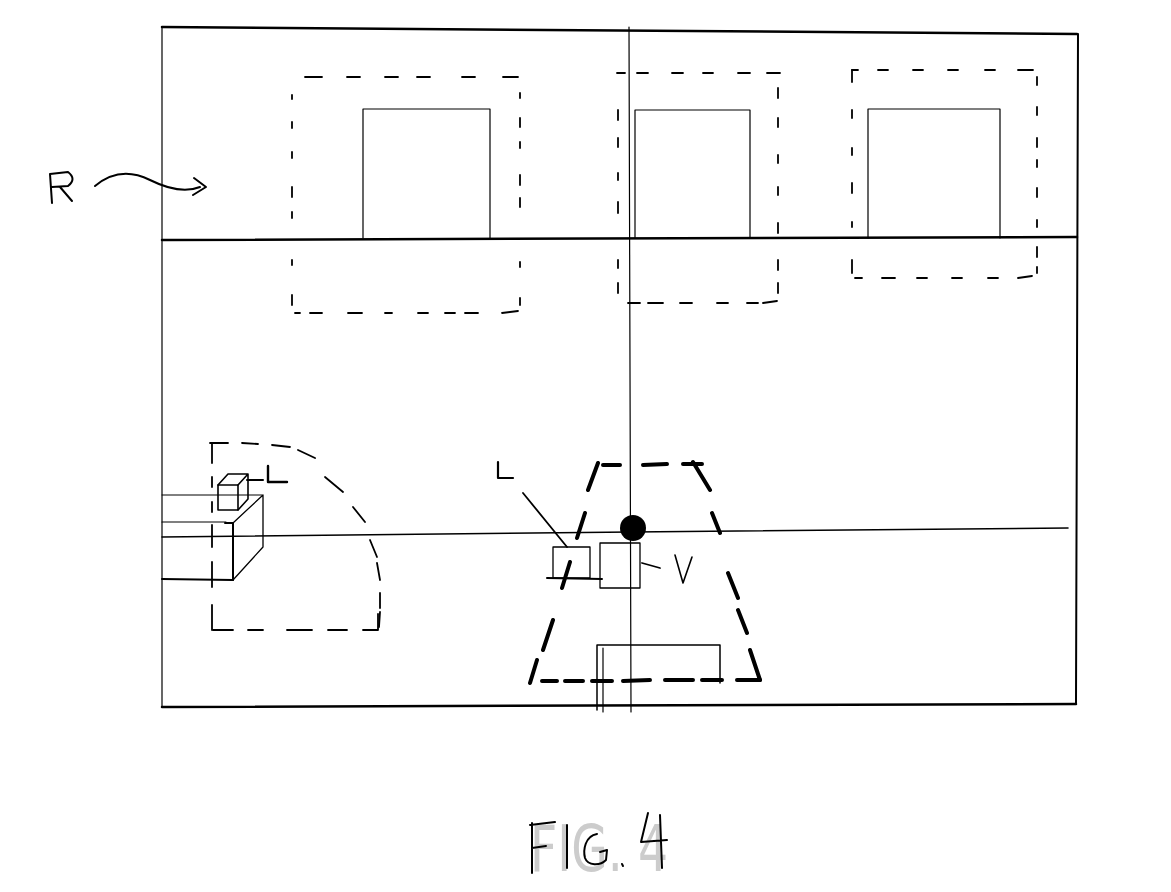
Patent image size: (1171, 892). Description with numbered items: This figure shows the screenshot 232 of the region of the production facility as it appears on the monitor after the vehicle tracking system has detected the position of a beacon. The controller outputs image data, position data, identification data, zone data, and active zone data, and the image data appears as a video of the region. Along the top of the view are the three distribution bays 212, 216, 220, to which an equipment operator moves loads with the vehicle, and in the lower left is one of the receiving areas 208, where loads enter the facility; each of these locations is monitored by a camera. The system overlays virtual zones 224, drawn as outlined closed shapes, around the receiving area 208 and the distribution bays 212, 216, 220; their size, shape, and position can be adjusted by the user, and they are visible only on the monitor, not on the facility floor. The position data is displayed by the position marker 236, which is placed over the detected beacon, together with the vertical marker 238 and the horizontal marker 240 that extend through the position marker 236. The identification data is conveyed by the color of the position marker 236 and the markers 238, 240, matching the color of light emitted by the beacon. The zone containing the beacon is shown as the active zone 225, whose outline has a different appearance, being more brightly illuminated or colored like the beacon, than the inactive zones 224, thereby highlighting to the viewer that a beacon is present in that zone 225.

The receiving area 208 is at (610, 643).
The distribution bay 212 is at (364, 188).
The distribution bay 216 is at (641, 182).
The distribution bay 220 is at (876, 180).
The virtual zone 224 is at (336, 318).
The active zone 225 is at (712, 468).
The screenshot 232 is at (1078, 400).
The position marker 236 is at (645, 512).
The vertical marker 238 is at (632, 368).
The horizontal marker 240 is at (900, 529).